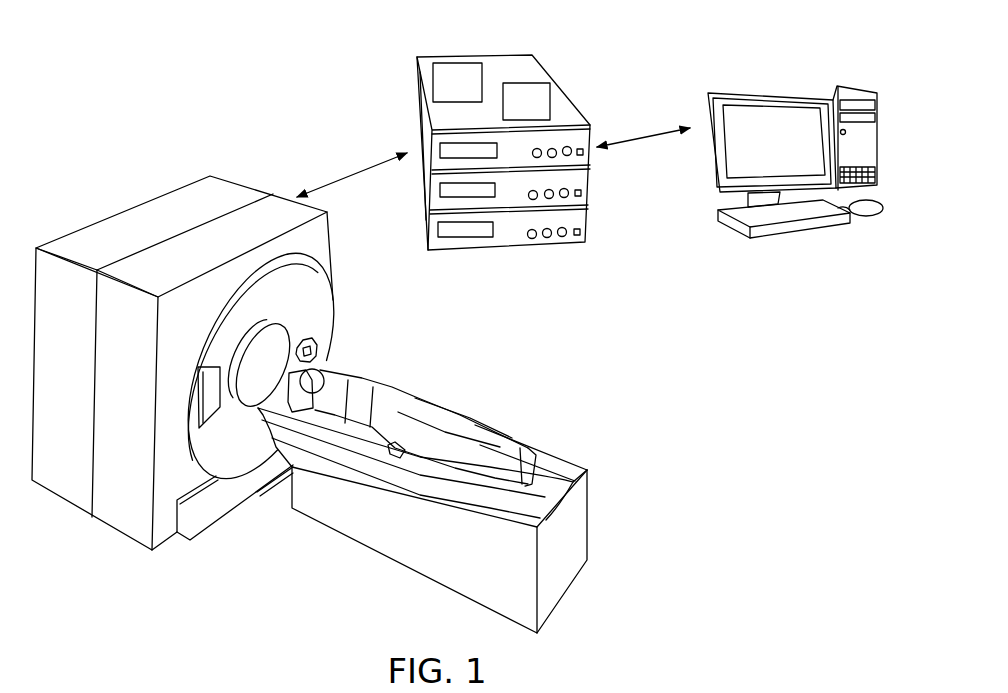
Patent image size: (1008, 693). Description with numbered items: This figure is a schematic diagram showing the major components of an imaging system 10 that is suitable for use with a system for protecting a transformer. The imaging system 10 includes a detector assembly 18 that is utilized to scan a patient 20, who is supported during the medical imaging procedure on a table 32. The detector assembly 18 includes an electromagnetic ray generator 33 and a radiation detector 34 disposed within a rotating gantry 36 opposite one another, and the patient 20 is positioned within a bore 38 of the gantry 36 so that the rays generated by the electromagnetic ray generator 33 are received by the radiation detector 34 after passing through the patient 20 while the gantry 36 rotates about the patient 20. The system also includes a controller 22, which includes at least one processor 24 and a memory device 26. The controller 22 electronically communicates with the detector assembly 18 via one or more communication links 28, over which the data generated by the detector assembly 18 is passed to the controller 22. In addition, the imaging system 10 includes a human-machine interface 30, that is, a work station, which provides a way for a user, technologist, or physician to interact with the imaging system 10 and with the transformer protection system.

The imaging system 10 is at (191, 64).
The detector assembly 18 is at (327, 226).
The patient 20 is at (393, 384).
The controller 22 is at (412, 82).
The processor 24 is at (447, 74).
The memory device 26 is at (535, 96).
The communication links 28 is at (352, 172).
The human-machine interface 30 is at (786, 93).
The table 32 is at (434, 567).
The electromagnetic ray generator 33 is at (323, 346).
The radiation detector 34 is at (208, 430).
The rotating gantry 36 is at (330, 283).
The bore 38 is at (276, 320).